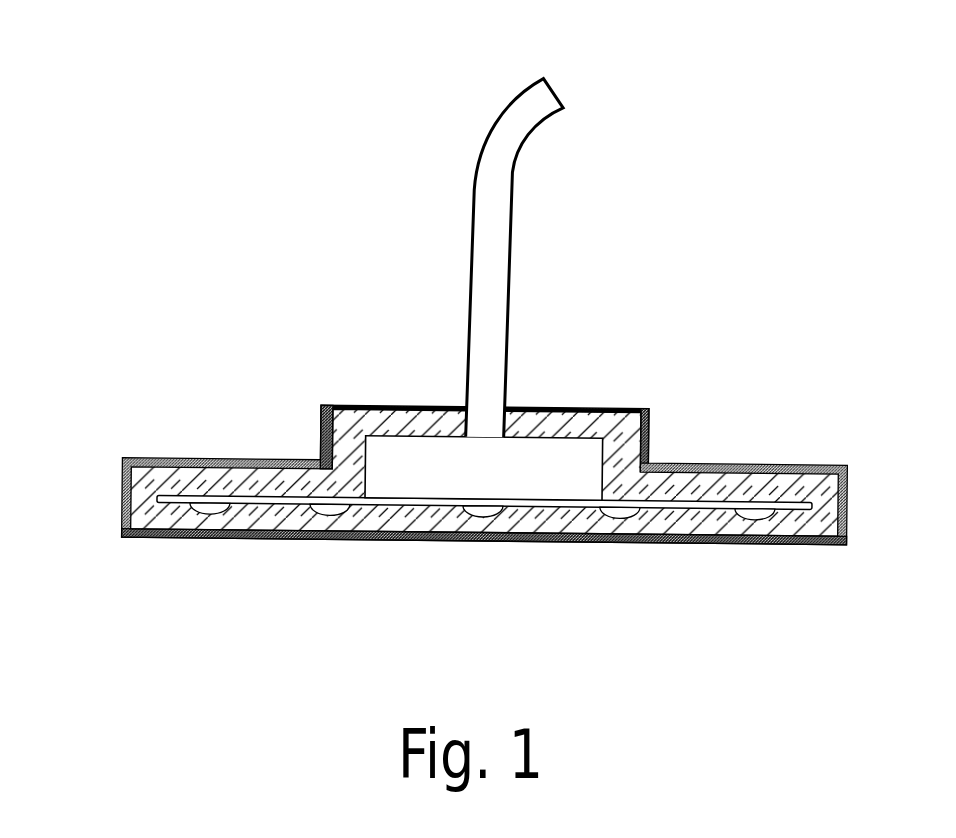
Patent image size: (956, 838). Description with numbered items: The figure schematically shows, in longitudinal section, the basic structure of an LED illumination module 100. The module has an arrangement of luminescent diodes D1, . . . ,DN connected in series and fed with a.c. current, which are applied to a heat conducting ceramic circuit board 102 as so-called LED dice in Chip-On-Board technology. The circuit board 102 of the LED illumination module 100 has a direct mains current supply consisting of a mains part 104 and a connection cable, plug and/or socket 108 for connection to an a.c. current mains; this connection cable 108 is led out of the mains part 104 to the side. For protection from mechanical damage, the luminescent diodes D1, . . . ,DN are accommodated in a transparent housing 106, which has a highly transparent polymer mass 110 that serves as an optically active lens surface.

The LED illumination module 100 is at (432, 298).
The circuit board 102 is at (122, 497).
The mains part 104 is at (437, 446).
The transparent housing 106 is at (662, 545).
The connection cable, plug and/or socket 108 is at (468, 193).
The transparent polymer mass 110 is at (320, 447).
The luminescent diode D1 is at (375, 533).